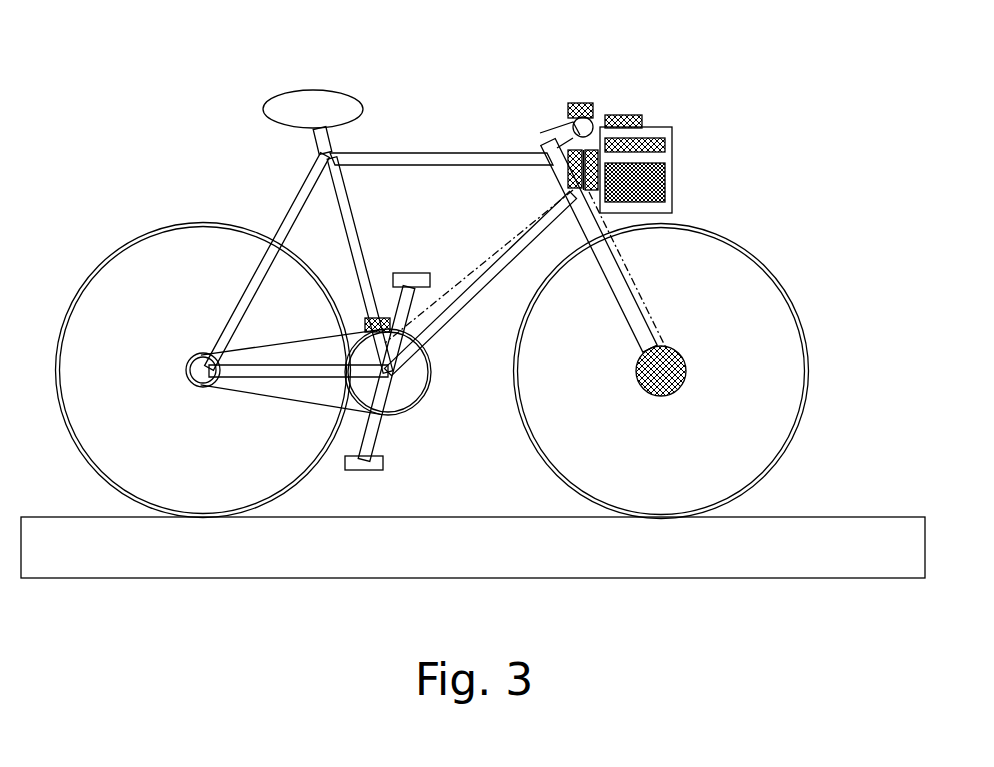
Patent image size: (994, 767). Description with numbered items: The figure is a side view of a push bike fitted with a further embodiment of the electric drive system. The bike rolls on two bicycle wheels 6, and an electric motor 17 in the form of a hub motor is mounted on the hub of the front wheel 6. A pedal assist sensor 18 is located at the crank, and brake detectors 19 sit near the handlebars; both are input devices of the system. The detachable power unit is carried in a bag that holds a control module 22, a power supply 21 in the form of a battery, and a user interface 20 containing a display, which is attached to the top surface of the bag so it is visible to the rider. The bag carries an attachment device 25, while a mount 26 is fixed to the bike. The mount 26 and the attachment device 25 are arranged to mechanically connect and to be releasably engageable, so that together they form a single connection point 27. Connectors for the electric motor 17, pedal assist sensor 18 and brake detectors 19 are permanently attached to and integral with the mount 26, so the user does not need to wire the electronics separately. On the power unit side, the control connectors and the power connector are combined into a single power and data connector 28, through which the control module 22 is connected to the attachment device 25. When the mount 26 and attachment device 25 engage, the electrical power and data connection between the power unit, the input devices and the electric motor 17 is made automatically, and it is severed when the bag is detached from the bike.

The bicycle wheel 6 is at (780, 268).
The electric motor 17 is at (680, 398).
The pedal assist sensor 18 is at (390, 374).
The brake detectors 19 is at (582, 100).
The user interface 20 is at (646, 112).
The power supply 21 is at (674, 181).
The control module 22 is at (672, 143).
The attachment device 25 is at (594, 160).
The mount 26 is at (568, 157).
The single connection point 27 is at (584, 190).
The single power and data connector 28 is at (602, 154).